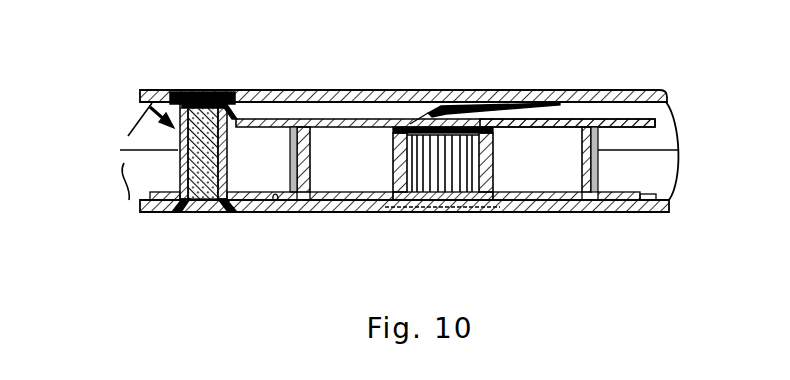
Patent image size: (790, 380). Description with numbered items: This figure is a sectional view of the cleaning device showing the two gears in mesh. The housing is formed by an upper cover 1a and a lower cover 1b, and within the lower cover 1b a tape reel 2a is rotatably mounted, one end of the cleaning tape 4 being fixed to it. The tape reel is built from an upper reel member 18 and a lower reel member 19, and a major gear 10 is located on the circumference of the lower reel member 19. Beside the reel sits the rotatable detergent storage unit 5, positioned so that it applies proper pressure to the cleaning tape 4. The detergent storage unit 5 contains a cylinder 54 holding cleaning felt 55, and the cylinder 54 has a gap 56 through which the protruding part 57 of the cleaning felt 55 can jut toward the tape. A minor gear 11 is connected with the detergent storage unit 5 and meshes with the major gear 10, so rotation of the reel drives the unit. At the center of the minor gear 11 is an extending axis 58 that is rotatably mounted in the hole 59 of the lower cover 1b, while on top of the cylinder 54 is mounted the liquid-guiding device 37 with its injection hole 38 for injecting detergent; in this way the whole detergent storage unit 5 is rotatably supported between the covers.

The upper cover 1a is at (397, 90).
The lower cover 1b is at (144, 213).
The tape reel 2a is at (350, 118).
The cleaning tape 4 is at (293, 130).
The detergent storage unit 5 is at (146, 90).
The major gear 10 is at (244, 200).
The minor gear 11 is at (157, 192).
The upper reel member 18 is at (530, 118).
The lower reel member 19 is at (279, 212).
The liquid-guiding device 37 is at (179, 92).
The injection hole 38 is at (198, 94).
The cylinder 54 is at (179, 146).
The cleaning felt 55 is at (210, 94).
The gap 56 is at (236, 95).
The protruding part 57 is at (230, 143).
The extending axis 58 is at (185, 213).
The hole 59 is at (204, 213).